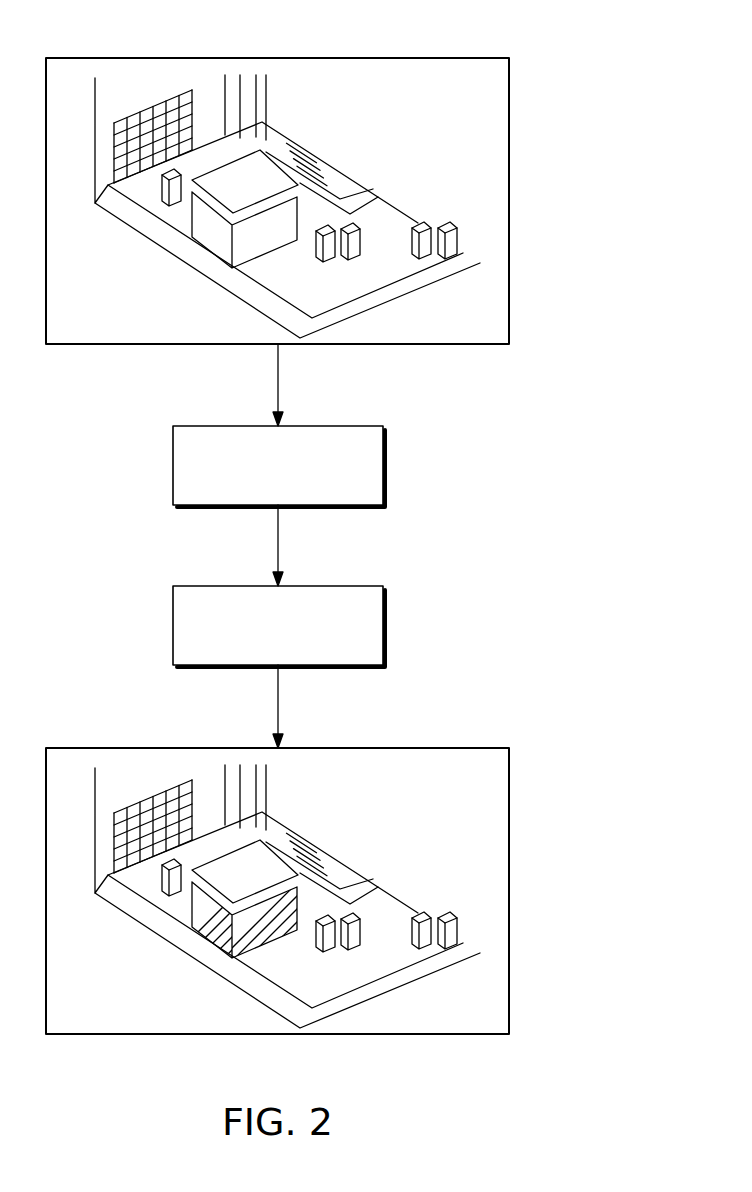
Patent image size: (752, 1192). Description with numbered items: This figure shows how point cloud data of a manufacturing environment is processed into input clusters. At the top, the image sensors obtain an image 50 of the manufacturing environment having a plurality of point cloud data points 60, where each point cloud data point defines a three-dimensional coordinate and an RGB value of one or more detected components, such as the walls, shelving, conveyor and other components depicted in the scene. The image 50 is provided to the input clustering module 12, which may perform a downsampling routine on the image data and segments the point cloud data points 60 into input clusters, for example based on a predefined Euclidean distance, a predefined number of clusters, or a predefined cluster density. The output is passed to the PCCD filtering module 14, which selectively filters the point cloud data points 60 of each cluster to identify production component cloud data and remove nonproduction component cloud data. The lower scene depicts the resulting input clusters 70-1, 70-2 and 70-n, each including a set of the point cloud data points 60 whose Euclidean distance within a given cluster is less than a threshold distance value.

The image 50 is at (145, 57).
The point cloud data points 60 is at (337, 147).
The input clustering module 12 is at (173, 465).
The PCCD filtering module 14 is at (173, 625).
The input cluster 70-1 is at (268, 797).
The input cluster 70-2 is at (362, 912).
The input cluster 70-n is at (438, 903).